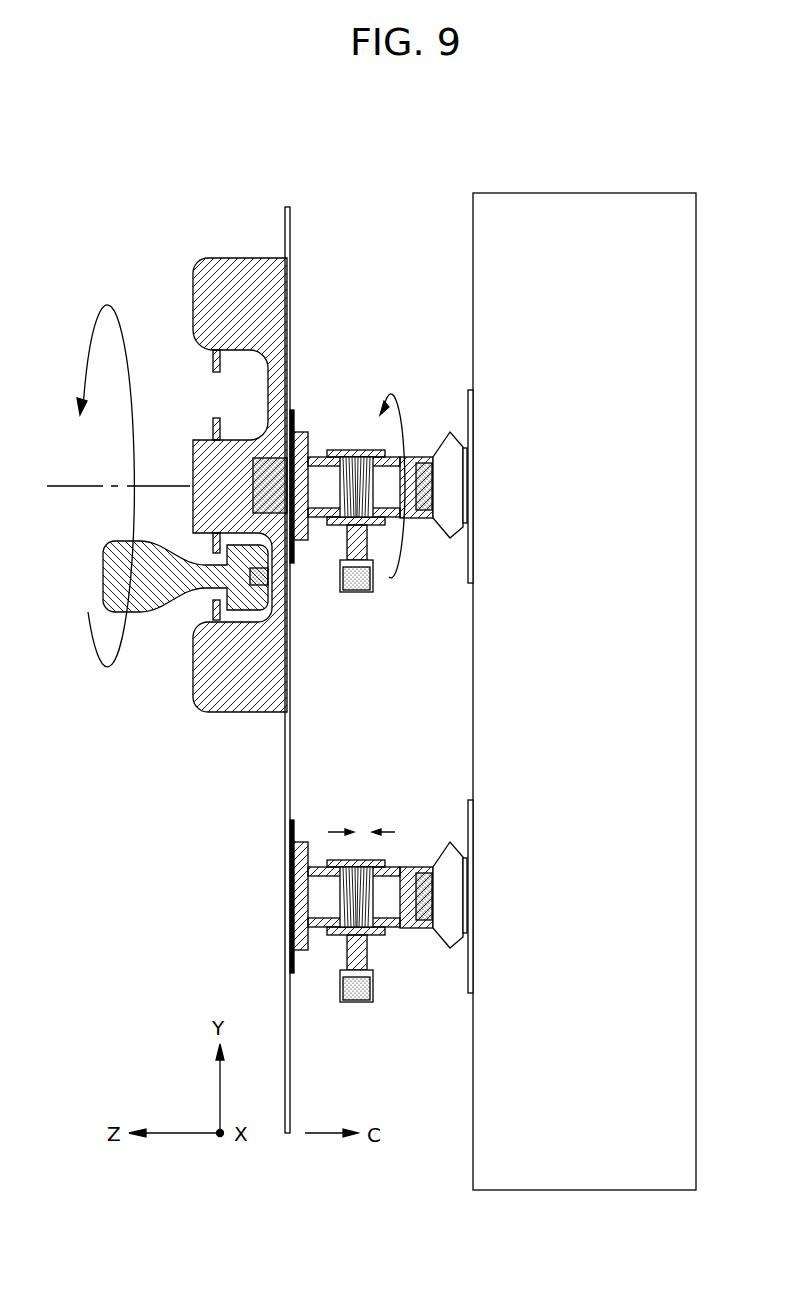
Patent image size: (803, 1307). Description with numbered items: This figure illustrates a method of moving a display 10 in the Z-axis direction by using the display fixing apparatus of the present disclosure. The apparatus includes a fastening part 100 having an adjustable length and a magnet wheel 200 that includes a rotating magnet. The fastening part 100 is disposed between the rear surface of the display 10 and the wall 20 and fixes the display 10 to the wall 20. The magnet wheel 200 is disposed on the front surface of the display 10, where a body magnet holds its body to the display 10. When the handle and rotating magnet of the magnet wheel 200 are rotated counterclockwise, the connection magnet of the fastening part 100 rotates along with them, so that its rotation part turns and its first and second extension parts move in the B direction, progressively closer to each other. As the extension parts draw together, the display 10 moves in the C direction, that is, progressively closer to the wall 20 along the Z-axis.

The display 10 is at (292, 243).
The wall 20 is at (584, 192).
The fastening part 100 is at (403, 927).
The magnet wheel 200 is at (214, 257).